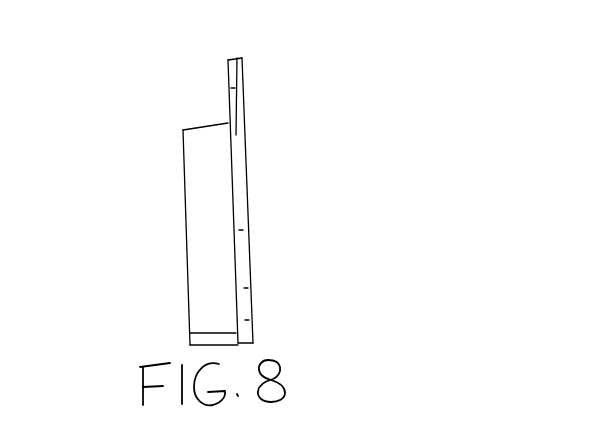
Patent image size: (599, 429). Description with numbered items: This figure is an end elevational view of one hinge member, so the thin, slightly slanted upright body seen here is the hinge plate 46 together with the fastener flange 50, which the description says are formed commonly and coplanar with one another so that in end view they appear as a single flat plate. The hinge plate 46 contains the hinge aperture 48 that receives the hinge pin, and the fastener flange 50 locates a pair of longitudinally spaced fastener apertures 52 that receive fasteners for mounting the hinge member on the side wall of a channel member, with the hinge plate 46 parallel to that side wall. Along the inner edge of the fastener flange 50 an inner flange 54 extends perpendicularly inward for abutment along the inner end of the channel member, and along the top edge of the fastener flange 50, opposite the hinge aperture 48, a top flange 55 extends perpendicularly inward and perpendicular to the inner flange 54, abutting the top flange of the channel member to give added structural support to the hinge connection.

The hinge plate 46 is at (253, 336).
The hinge aperture 48 is at (252, 301).
The fastener flange 50 is at (243, 103).
The fastener apertures 52 is at (240, 60).
The inner flange 54 is at (215, 330).
The top flange 55 is at (203, 199).